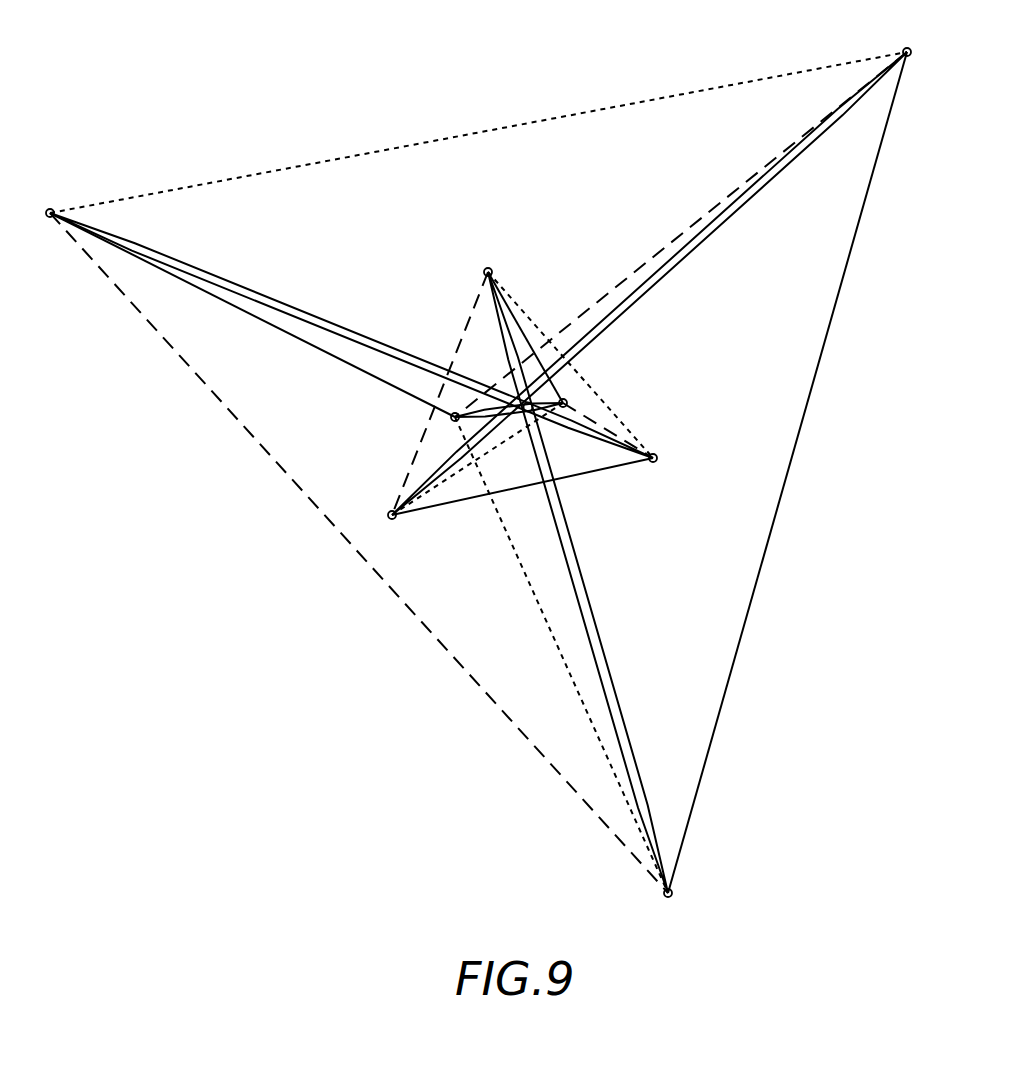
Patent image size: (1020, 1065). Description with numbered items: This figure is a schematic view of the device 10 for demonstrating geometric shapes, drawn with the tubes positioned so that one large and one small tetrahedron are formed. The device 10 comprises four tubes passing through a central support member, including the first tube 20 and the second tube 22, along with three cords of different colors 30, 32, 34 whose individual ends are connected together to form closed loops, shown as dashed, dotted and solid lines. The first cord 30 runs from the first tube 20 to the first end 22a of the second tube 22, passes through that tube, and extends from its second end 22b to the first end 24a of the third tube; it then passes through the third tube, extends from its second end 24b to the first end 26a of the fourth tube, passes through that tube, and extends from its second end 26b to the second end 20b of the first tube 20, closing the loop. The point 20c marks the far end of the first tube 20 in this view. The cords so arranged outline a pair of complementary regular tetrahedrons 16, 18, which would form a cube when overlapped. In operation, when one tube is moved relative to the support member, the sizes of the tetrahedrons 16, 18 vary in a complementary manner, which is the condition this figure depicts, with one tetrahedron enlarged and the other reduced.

The device 10 is at (541, 80).
The tetrahedron 16 is at (611, 467).
The tetrahedron 18 is at (787, 472).
The first tube 20 is at (707, 238).
The second end of first tube 20b is at (401, 533).
The strut end 20c is at (894, 36).
The second tube 22 is at (292, 312).
The first end of second tube 22a is at (73, 195).
The second end of second tube 22b is at (681, 460).
The first end of third tube 24a is at (494, 258).
The second end of third tube 24b is at (683, 909).
The first end of fourth tube 26a is at (444, 419).
The second end of fourth tube 26b is at (574, 401).
The first cord 30 is at (531, 597).
The second cord 32 is at (797, 452).
The third cord 34 is at (446, 654).